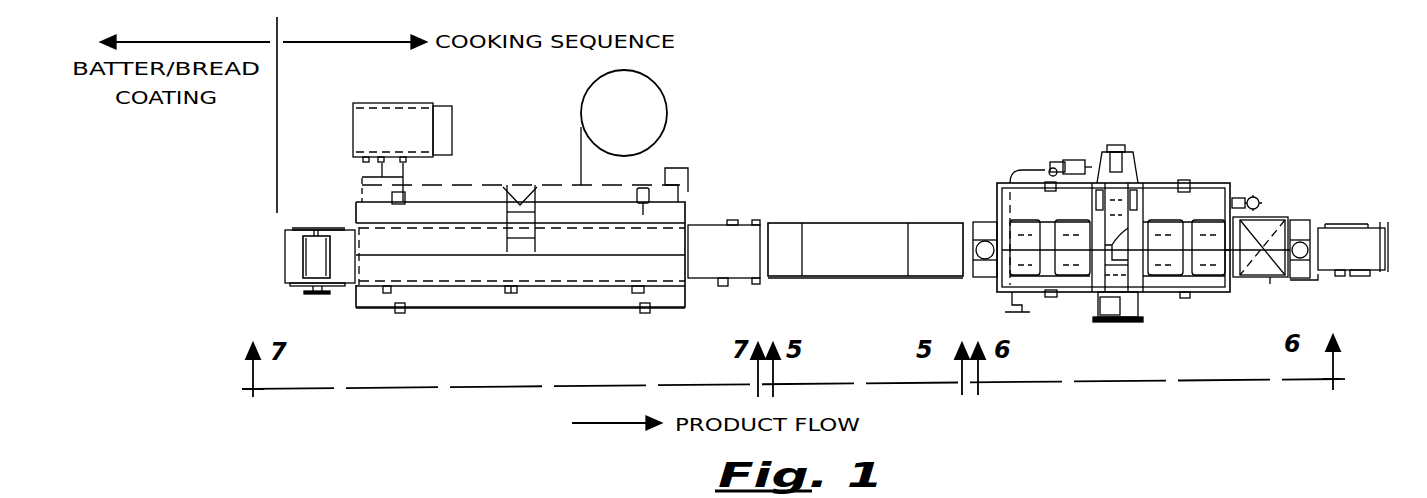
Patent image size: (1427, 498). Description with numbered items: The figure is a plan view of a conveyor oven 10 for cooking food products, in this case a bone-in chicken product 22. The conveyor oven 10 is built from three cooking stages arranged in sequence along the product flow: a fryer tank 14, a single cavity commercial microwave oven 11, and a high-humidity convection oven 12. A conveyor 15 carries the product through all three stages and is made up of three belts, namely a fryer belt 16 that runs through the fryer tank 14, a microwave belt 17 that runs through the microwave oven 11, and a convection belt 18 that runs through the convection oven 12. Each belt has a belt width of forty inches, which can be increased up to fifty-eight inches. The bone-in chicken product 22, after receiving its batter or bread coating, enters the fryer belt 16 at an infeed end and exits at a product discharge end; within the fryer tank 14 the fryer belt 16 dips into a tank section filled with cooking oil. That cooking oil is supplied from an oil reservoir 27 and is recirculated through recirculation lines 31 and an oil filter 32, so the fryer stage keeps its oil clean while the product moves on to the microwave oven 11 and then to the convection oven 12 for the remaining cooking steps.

The conveyor oven 10 is at (975, 117).
The single cavity commercial microwave oven 11 is at (878, 208).
The high-humidity convection oven 12 is at (1172, 165).
The fryer tank 14 is at (478, 137).
The conveyor 15 is at (722, 299).
The fryer belt 16 is at (337, 292).
The microwave belt 17 is at (797, 276).
The convection belt 18 is at (1362, 270).
The bone-in chicken product 22 is at (300, 256).
The oil reservoir 27 is at (657, 100).
The recirculation lines 31 is at (483, 185).
The oil filter 32 is at (414, 118).